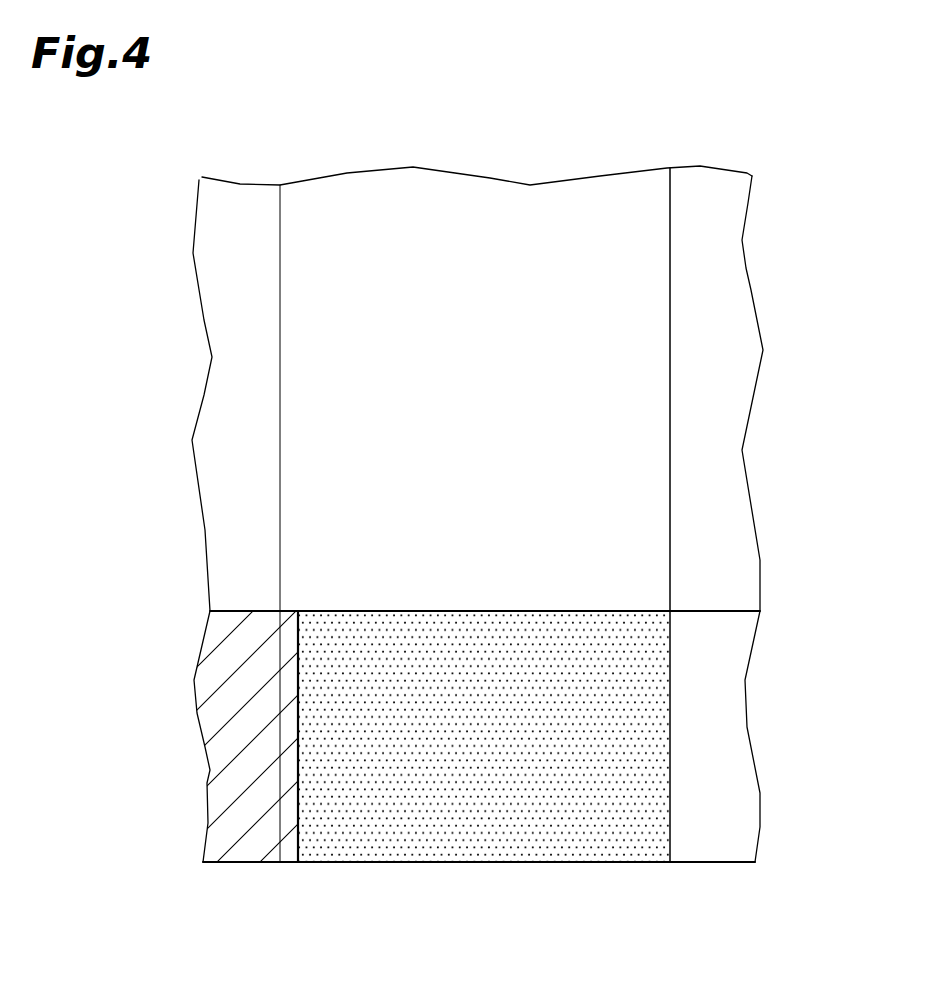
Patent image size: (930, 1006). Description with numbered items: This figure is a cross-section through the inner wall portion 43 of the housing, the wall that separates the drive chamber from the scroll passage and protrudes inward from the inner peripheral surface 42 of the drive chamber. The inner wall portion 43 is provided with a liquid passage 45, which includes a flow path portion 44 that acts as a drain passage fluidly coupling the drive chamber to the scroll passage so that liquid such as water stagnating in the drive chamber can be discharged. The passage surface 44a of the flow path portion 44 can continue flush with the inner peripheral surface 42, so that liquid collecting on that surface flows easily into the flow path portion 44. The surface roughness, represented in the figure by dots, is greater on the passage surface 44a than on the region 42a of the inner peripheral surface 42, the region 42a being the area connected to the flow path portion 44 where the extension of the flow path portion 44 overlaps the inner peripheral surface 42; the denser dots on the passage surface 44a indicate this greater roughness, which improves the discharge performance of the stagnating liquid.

The inner peripheral surface 42 is at (713, 187).
The region of the inner peripheral surface 42a is at (280, 227).
The inner wall portion 43 is at (208, 690).
The flow path portion 44 is at (345, 863).
The passage surface 44a is at (438, 838).
The liquid passage 45 is at (655, 699).